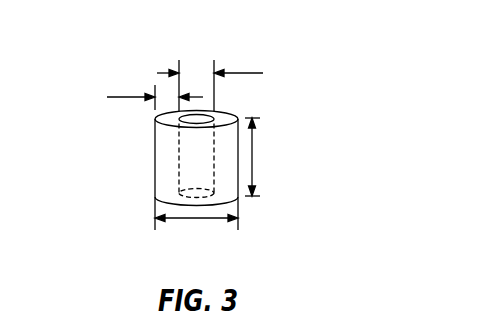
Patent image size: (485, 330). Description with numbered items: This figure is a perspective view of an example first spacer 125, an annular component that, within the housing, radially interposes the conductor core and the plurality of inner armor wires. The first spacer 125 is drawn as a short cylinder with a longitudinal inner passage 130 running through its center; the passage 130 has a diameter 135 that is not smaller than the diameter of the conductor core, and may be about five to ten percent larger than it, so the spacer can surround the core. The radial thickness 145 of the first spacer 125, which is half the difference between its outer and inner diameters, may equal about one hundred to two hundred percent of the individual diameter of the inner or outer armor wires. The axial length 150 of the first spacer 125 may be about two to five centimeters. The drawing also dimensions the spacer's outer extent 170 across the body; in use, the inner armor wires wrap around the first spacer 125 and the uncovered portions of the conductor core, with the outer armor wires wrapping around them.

The first spacer 125 is at (155, 182).
The longitudinal inner passage 130 is at (178, 158).
The diameter of the passage 135 is at (243, 73).
The radial thickness 145 is at (128, 97).
The axial length 150 is at (253, 157).
The outer diameter 170 is at (239, 217).